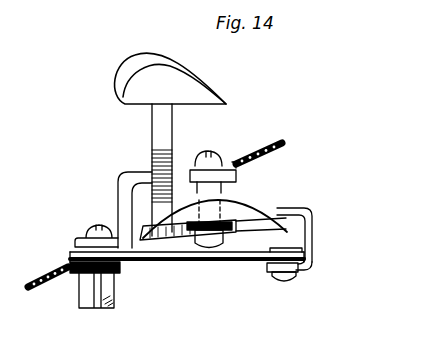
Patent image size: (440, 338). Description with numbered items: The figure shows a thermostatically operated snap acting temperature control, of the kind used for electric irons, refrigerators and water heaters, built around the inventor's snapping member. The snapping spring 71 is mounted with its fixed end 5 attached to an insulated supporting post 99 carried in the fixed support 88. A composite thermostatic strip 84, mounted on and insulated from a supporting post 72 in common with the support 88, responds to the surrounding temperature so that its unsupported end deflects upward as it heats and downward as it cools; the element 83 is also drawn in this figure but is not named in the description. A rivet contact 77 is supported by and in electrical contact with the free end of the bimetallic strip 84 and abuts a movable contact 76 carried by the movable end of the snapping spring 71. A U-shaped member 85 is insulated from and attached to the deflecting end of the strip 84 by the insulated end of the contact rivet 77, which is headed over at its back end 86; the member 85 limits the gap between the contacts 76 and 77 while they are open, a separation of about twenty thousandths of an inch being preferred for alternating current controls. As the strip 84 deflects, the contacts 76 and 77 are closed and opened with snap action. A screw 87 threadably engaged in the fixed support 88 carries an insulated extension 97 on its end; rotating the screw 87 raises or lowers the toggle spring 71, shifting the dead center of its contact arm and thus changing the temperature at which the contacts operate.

The fixed end 5 is at (228, 236).
The snapping spring 71 is at (240, 201).
The supporting post 72 is at (73, 287).
The movable contact 76 is at (298, 246).
The rivet contact 77 is at (313, 262).
The bracket flange 83 is at (154, 249).
The composite thermostatic strip 84 is at (181, 263).
The U-shaped member 85 is at (312, 213).
The back end 86 is at (291, 281).
The screw 87 is at (152, 129).
The fixed support 88 is at (118, 180).
The insulated extension 97 is at (145, 225).
The insulated supporting post 99 is at (272, 205).